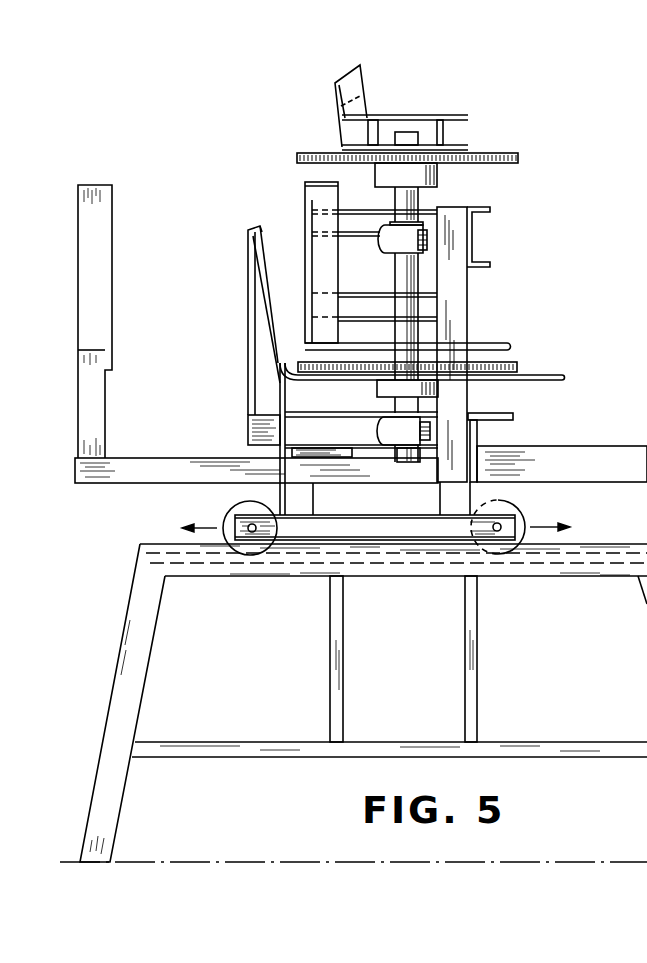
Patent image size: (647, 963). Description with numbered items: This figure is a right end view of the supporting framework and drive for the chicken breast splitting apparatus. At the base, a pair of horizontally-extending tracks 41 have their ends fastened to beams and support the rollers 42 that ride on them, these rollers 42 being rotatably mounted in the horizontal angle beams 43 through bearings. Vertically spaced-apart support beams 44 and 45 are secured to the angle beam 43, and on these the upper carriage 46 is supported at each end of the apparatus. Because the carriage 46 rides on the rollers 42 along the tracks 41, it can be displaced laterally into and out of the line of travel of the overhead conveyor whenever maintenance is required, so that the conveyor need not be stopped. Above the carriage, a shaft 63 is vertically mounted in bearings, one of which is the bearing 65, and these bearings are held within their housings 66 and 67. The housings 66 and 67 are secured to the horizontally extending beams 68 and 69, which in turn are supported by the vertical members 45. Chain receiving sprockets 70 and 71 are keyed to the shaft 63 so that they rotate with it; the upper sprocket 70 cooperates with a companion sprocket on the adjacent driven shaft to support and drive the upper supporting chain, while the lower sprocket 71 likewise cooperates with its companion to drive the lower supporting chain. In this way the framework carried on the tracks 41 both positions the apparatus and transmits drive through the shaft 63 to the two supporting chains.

The tracks 41 is at (590, 548).
The wheels 42 is at (240, 504).
The angle beams 43 is at (400, 541).
The support beam 44 is at (310, 497).
The support beam 45 is at (447, 490).
The upper carriage 46 is at (628, 471).
The shaft 63 is at (410, 278).
The bearing 65 is at (395, 412).
The housing 66 is at (390, 248).
The housing 67 is at (380, 424).
The horizontally extending beam 68 is at (480, 211).
The horizontally extending beam 69 is at (477, 432).
The chain receiving sprocket 70 is at (518, 157).
The chain receiving sprocket 71 is at (517, 367).